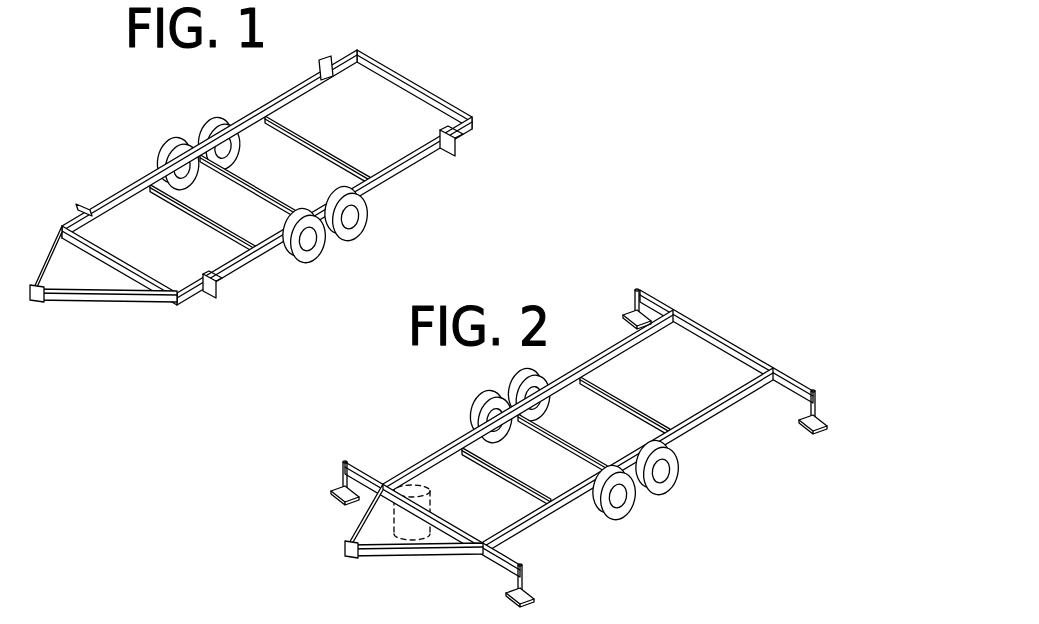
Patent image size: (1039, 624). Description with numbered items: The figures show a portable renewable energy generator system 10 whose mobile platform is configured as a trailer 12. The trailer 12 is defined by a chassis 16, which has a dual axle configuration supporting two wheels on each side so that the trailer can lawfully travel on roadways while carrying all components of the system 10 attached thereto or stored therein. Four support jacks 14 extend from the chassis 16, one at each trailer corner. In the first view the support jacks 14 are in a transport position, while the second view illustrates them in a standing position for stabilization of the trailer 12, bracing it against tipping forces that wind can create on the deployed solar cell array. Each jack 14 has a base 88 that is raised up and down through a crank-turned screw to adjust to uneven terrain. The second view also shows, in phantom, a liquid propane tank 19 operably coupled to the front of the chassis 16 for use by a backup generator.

In FIG. 1, the portable renewable energy generator system 10 is at (480, 58).
In FIG. 2, the portable renewable energy generator system 10 is at (840, 328).
In FIG. 1, the trailer 12 is at (251, 177).
In FIG. 1, the support jacks 14 is at (336, 54).
In FIG. 2, the support jacks 14 is at (598, 448).
In FIG. 1, the chassis 16 is at (410, 160).
In FIG. 2, the chassis 16 is at (727, 335).
In FIG. 2, the liquid propane (LP) tank 19 is at (380, 512).
In FIG. 1, the base 88 is at (457, 152).
In FIG. 2, the base 88 is at (538, 590).